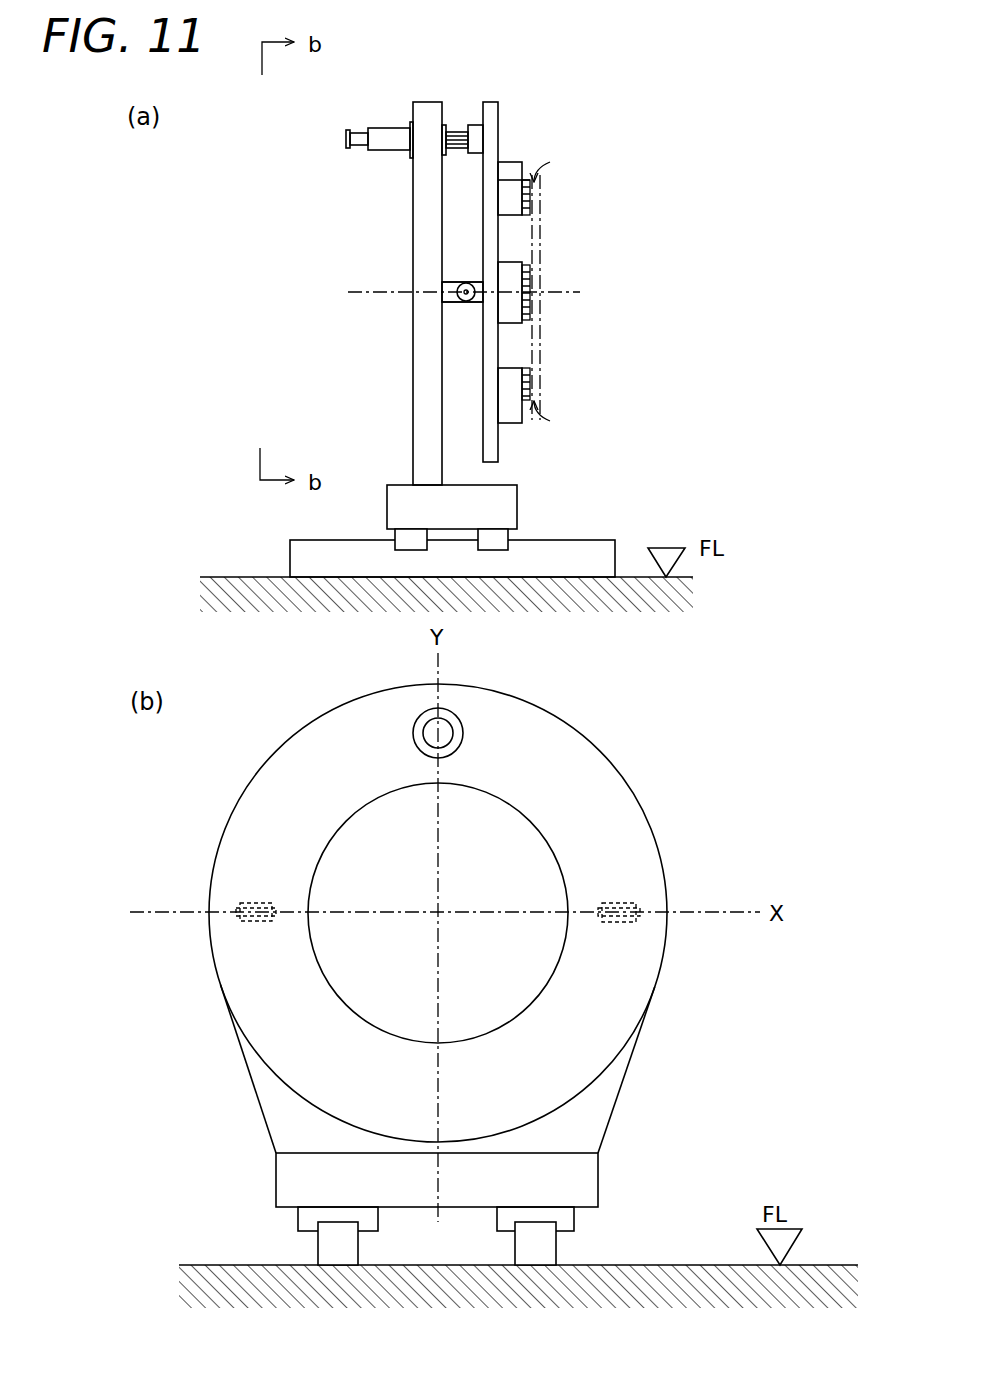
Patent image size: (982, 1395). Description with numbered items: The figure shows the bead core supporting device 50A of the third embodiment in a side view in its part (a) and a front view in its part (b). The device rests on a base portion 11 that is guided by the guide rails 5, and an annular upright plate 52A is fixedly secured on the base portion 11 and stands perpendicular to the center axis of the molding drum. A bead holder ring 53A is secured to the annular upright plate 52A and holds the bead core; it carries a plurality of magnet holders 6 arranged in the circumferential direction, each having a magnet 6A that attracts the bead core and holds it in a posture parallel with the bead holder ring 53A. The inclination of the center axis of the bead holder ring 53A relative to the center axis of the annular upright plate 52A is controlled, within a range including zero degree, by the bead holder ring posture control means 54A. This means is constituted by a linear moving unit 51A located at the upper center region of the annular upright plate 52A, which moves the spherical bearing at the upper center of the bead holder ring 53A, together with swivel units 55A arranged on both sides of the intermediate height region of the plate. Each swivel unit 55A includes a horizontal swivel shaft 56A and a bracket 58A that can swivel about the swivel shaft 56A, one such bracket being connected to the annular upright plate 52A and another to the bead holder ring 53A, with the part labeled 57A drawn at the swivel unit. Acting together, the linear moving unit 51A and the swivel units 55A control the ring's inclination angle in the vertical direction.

The bead core supporting device 50A is at (612, 128).
The guide rails 5 is at (305, 553).
The base portion 11 is at (394, 494).
The annular upright plate 52A is at (413, 102).
The bead holder ring 53A is at (498, 102).
The magnet holders 6 is at (512, 164).
The magnet 6A is at (531, 196).
The bead holder ring posture control means 54A is at (243, 155).
The linear moving unit 51A is at (455, 158).
The swivel units 55A is at (450, 281).
The pivot pin 57A is at (465, 282).
The horizontal swivel shaft 56A is at (470, 305).
The bracket 58A is at (441, 303).